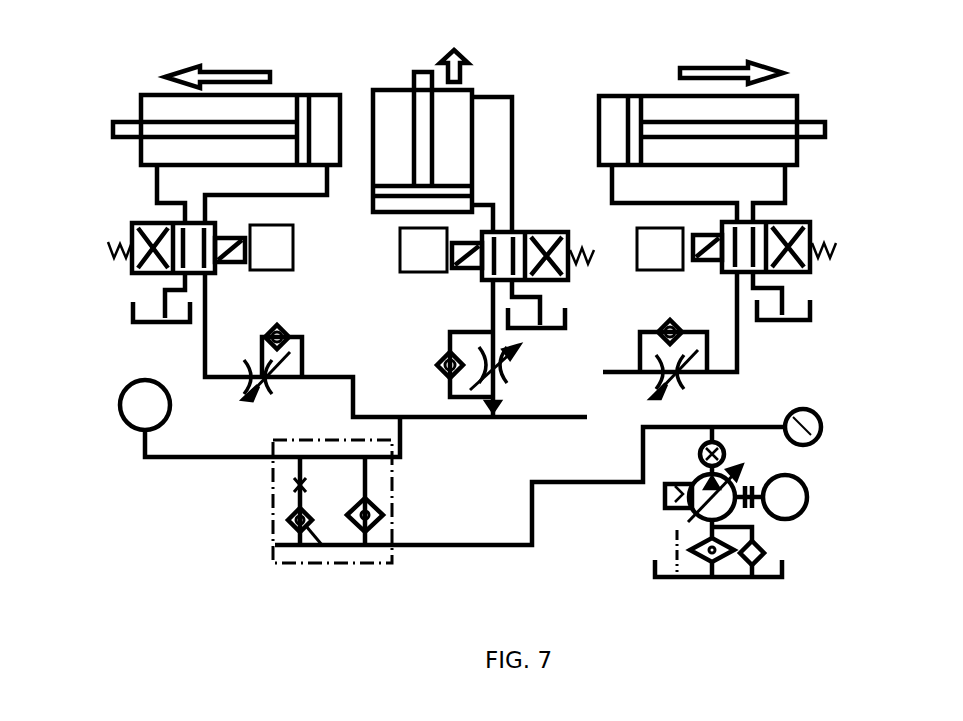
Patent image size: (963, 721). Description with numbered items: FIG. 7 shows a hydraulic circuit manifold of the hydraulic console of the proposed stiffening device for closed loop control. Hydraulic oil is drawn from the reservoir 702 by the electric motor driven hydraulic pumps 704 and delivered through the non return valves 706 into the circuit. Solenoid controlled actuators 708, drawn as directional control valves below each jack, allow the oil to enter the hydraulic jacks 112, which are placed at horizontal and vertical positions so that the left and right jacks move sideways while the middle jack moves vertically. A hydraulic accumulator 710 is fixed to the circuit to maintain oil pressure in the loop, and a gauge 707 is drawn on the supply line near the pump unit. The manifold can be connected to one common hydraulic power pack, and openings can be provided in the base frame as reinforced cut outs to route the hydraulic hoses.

The hydraulic cylinder actuator 112 is at (282, 91).
The solenoid controlled actuators 708 is at (131, 272).
The non return valves 706 is at (285, 323).
The hydraulic accumulator 710 is at (117, 409).
The pressure gauge 707 is at (826, 428).
The electric motor driven hydraulic pumps 704 is at (820, 492).
The reservoir 702 is at (786, 568).